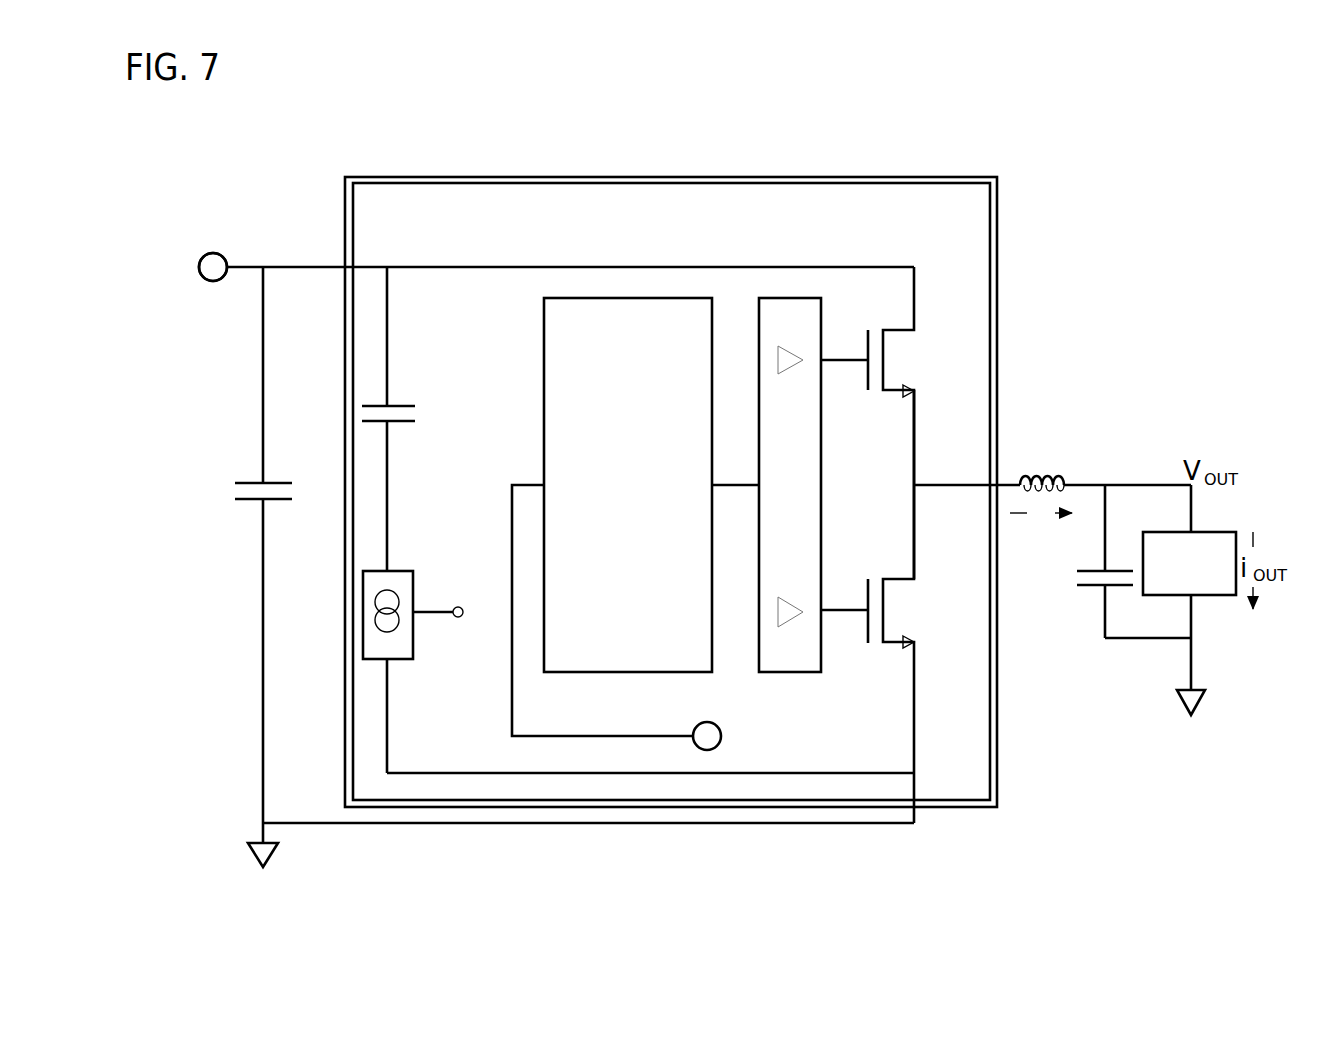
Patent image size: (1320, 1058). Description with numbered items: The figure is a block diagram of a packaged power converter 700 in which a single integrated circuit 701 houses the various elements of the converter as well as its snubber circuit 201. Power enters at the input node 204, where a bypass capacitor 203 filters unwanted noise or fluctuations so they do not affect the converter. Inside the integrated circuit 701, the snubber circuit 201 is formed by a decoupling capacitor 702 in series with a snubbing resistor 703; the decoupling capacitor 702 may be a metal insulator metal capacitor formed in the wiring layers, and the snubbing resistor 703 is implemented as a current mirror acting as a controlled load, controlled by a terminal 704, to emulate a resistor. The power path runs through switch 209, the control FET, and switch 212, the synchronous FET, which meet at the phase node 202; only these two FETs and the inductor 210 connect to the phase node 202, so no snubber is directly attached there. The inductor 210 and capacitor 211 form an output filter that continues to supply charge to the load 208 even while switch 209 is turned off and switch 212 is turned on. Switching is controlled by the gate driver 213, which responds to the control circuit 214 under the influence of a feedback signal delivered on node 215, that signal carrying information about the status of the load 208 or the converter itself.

The power converter 700 is at (198, 157).
The integrated circuit 701 is at (975, 217).
The snubber circuit 201 is at (387, 251).
The phase node 202 is at (903, 507).
The bypass capacitor 203 is at (241, 510).
The input node 204 is at (228, 250).
The load 208 is at (1213, 579).
The switch 209 is at (864, 318).
The inductor 210 is at (1065, 468).
The capacitor 211 is at (1070, 609).
The switch 212 is at (871, 659).
The gate driver 213 is at (813, 501).
The control circuit 214 is at (652, 501).
The node 215 is at (725, 722).
The decoupling capacitor 702 is at (405, 390).
The snubbing resistor 703 is at (405, 551).
The terminal 704 is at (458, 627).